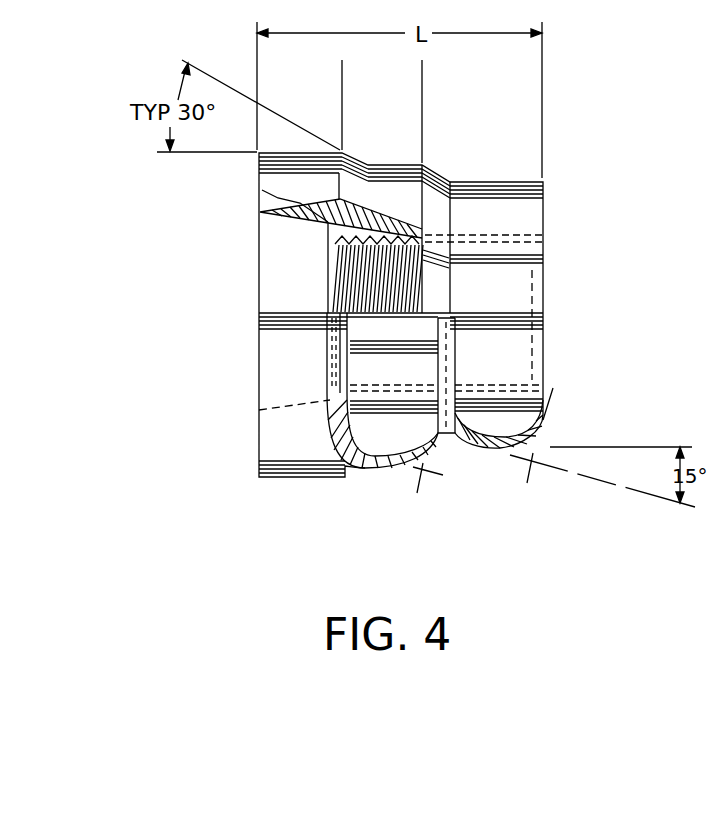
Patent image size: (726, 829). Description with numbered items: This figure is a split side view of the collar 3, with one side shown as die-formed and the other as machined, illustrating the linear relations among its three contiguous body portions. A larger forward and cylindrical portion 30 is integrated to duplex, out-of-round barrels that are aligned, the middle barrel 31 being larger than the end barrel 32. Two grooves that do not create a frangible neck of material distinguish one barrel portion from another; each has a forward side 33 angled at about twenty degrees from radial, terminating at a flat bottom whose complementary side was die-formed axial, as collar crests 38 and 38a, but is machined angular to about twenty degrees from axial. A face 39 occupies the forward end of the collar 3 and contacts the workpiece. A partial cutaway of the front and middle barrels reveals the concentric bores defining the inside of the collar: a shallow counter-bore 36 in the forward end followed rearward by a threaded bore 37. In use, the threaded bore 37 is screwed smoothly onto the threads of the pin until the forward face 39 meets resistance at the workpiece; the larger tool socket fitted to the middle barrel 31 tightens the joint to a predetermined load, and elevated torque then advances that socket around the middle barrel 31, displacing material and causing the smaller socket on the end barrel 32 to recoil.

The collar 3 is at (567, 242).
The forward cylindrical portion 30 is at (300, 149).
The middle barrel 31 is at (380, 153).
The end barrel 32 is at (477, 169).
The forward side of groove 33 is at (350, 468).
The shallow counter-bore 36 is at (292, 216).
The threaded bore 37 is at (332, 282).
The collar crest 38 is at (403, 470).
The collar crest 38a is at (503, 450).
The forward face 39 is at (300, 203).